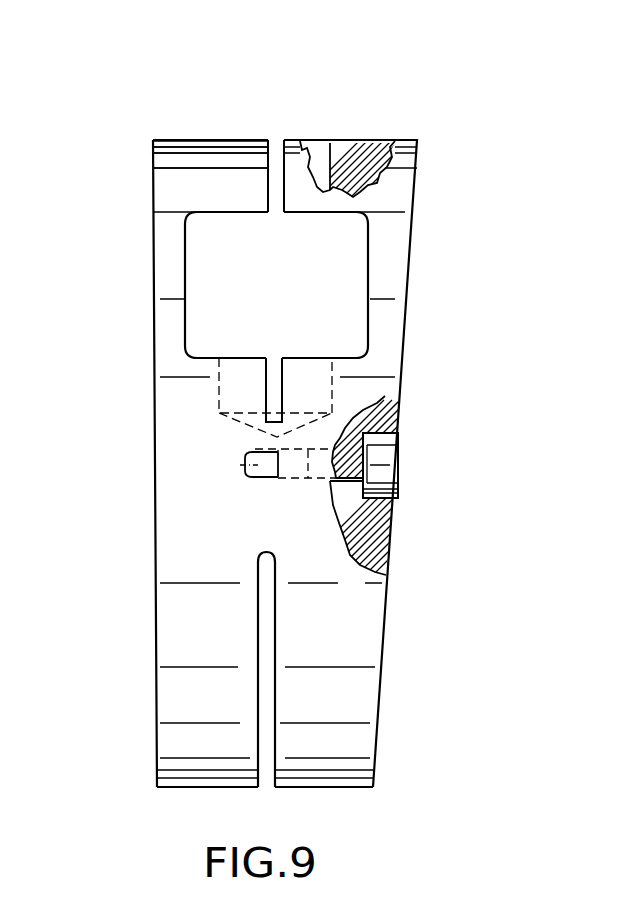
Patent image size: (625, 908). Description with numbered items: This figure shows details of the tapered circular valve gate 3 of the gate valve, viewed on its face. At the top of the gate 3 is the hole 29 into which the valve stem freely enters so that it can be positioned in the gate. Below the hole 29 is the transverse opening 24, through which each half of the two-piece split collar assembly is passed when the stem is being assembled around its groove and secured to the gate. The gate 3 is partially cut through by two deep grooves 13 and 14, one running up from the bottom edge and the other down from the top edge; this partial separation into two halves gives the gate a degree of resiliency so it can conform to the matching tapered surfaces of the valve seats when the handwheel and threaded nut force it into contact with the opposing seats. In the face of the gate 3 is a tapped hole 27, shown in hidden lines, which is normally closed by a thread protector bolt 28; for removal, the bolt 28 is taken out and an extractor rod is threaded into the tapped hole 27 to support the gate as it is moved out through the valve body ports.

The tapered circular valve gate 3 is at (413, 275).
The deep groove 13 is at (273, 693).
The deep groove 14 is at (270, 167).
The transverse opening 24 is at (338, 313).
The tapped hole 27 is at (292, 470).
The thread protector bolt 28 is at (402, 490).
The hole 29 is at (328, 147).